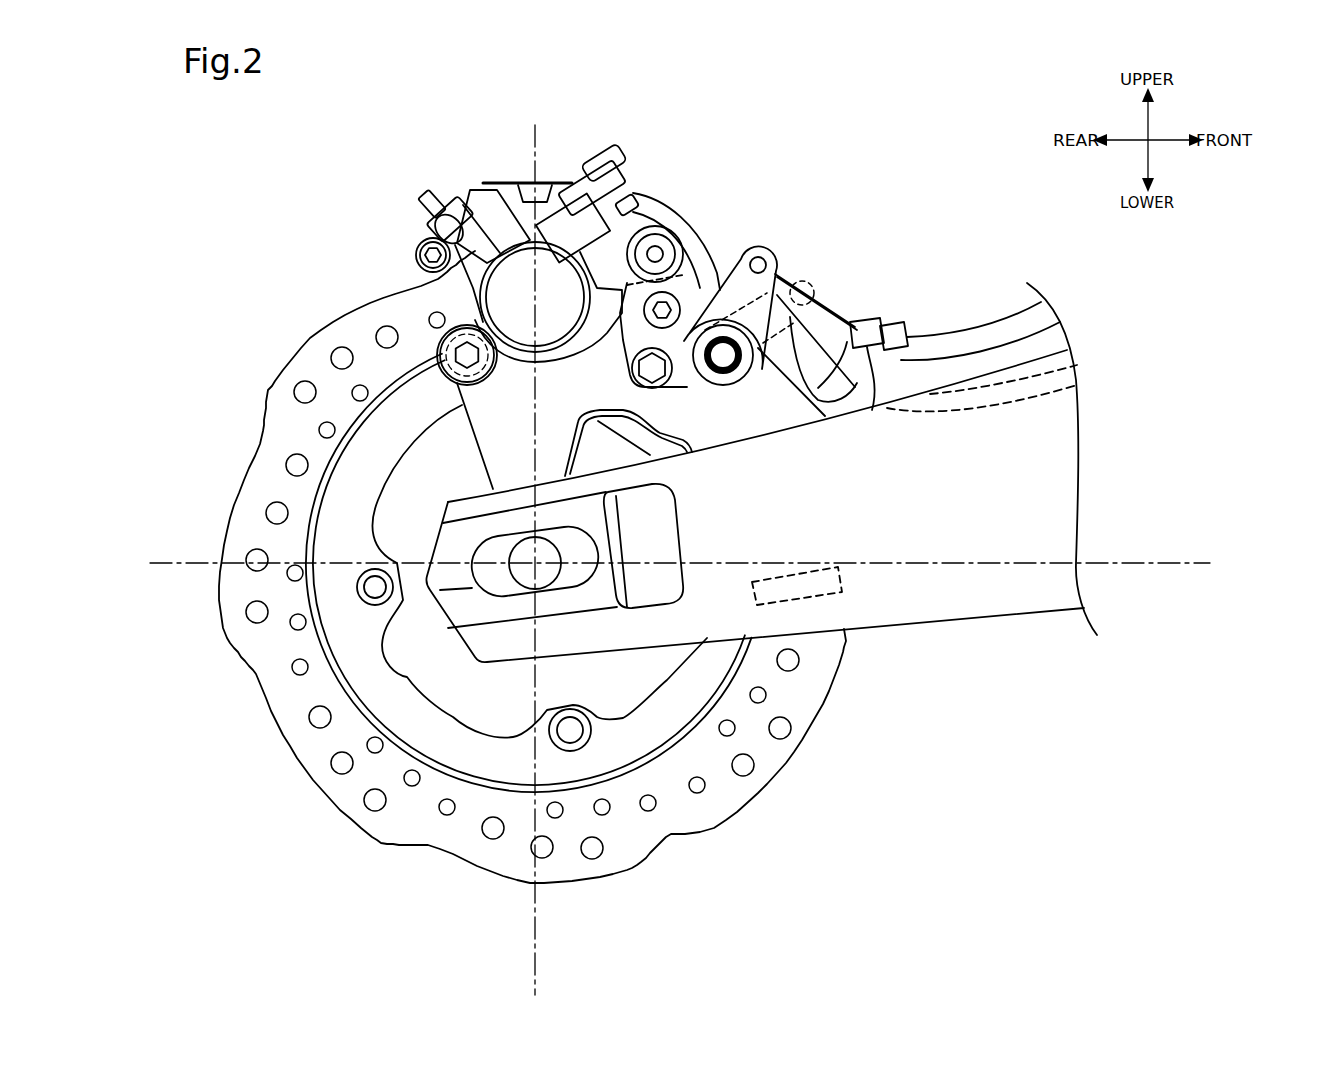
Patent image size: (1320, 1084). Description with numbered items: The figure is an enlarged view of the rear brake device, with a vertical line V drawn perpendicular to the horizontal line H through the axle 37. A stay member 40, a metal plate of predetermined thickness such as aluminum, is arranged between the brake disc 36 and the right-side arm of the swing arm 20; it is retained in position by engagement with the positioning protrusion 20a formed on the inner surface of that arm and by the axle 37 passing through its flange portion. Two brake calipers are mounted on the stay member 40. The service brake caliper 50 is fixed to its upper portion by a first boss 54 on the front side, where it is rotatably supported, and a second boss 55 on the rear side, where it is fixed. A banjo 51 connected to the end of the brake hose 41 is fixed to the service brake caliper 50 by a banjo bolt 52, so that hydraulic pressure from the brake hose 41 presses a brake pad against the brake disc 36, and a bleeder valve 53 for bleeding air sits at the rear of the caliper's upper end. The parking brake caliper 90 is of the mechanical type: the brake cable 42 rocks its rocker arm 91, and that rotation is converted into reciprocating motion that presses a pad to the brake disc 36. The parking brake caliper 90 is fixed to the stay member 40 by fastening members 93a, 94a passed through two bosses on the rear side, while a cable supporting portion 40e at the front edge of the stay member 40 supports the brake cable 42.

The swing arm 20 is at (985, 600).
The positioning protrusion 20a is at (817, 595).
The brake disc 36 is at (723, 807).
The axle 37 is at (523, 572).
The stay member 40 is at (493, 432).
The cable supporting portion 40e is at (832, 345).
The brake hose 41 is at (980, 413).
The brake cable 42 is at (962, 345).
The service brake caliper 50 is at (472, 183).
The banjo 51 is at (566, 165).
The banjo bolt 52 is at (605, 163).
The bleeder valve 53 is at (443, 198).
The first boss 54 is at (668, 240).
The second boss 55 is at (440, 332).
The parking brake caliper 90 is at (705, 313).
The rocker arm 91 is at (762, 252).
The fastening member 93a is at (713, 293).
The fastening member 94a is at (650, 226).
The horizontal line H is at (1130, 563).
The vertical line V is at (537, 905).